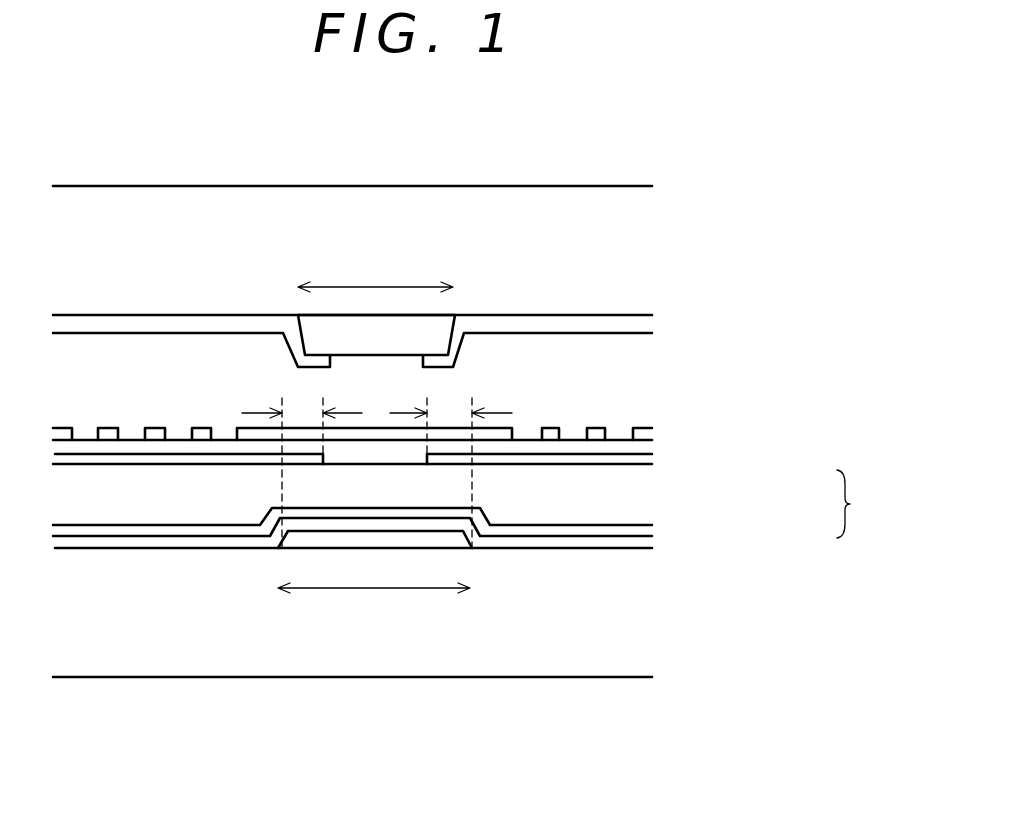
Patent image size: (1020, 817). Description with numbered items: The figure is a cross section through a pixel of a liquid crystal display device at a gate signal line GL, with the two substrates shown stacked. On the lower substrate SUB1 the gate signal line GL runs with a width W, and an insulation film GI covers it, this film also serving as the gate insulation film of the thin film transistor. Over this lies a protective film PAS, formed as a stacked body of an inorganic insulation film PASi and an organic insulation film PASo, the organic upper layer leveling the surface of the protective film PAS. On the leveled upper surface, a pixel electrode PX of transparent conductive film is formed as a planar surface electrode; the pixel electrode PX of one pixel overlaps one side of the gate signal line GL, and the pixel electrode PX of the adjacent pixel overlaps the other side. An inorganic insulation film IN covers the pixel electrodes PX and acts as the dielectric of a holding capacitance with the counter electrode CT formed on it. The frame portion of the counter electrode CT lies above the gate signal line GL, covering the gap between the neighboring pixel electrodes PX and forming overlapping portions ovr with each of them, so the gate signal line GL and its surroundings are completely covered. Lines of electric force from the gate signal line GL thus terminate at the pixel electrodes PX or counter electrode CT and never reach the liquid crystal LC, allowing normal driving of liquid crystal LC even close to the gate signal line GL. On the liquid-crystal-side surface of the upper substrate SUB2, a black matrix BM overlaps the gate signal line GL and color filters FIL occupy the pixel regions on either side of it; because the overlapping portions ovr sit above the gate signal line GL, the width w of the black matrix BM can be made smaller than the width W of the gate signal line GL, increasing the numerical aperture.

The substrate SUB2 is at (567, 207).
The color filter FIL is at (170, 322).
The black matrix BM is at (382, 335).
The width of black matrix w is at (375, 273).
The liquid crystal LC is at (168, 363).
The counter electrode CT is at (558, 430).
The overlapping portion ovr is at (377, 458).
The insulation film IN is at (647, 447).
The organic insulation film PASo is at (615, 492).
The inorganic insulation film PASi is at (638, 530).
The protective film PAS is at (874, 504).
The gate signal line GL is at (417, 542).
The insulation film GI is at (578, 545).
The width of gate signal line W is at (374, 575).
The pixel electrode PX is at (133, 460).
The substrate SUB1 is at (292, 648).